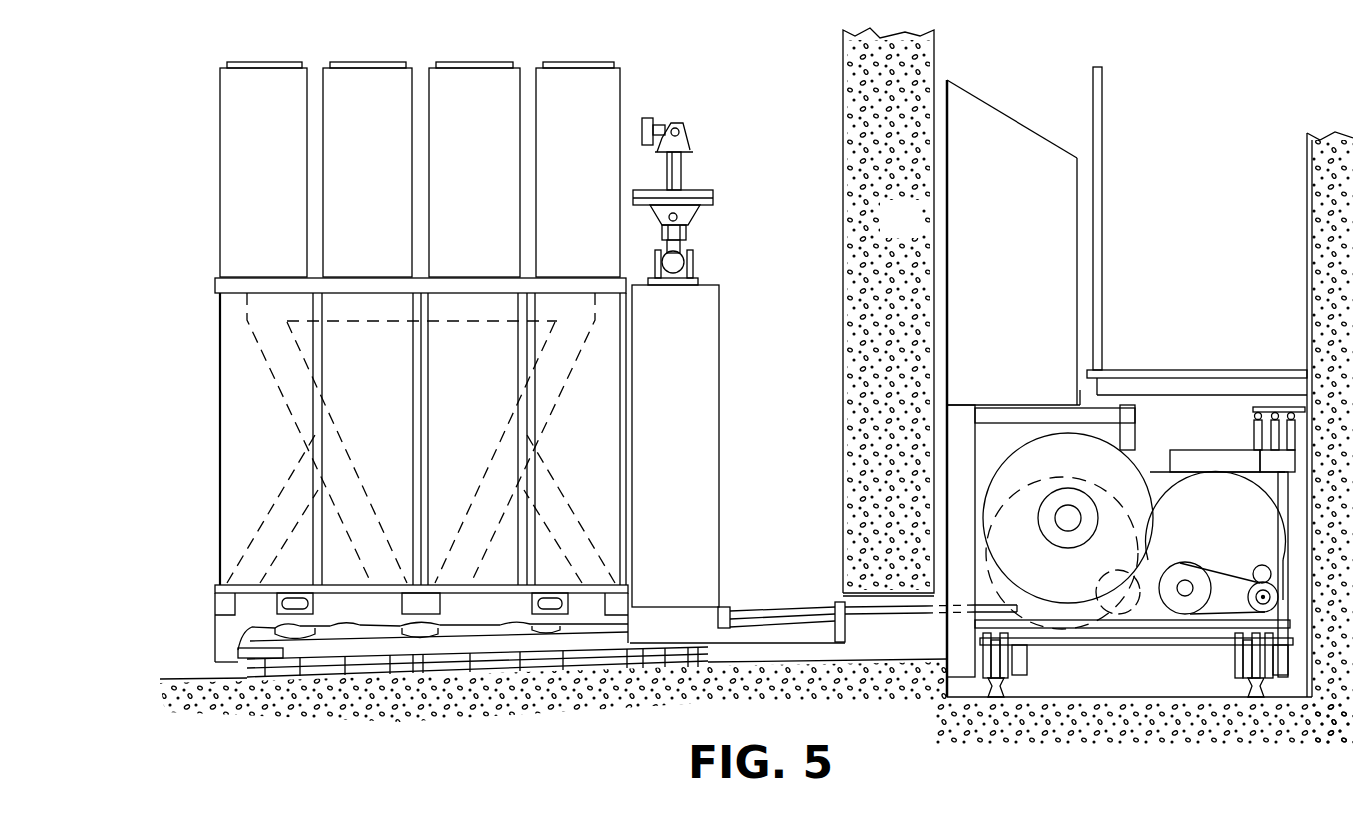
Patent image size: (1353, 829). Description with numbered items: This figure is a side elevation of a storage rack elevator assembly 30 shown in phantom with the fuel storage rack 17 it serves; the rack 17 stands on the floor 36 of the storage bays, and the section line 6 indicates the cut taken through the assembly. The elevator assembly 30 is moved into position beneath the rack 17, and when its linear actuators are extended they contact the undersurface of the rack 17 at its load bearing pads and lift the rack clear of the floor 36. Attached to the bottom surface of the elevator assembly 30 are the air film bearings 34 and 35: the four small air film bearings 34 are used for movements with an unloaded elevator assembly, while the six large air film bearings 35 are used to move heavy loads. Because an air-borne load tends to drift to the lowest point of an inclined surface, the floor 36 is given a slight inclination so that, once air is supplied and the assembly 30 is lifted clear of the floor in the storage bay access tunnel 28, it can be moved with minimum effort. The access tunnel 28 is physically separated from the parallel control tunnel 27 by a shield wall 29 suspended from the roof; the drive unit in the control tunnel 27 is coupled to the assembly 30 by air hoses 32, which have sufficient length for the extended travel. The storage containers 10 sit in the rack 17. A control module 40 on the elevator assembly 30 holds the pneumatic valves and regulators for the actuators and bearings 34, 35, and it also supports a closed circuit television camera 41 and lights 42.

The section line 6- 6 is at (677, 35).
The container 10 is at (280, 177).
The fuel storage rack 17 is at (214, 380).
The control tunnel 27 is at (1071, 80).
The storage bay access tunnel 28 is at (751, 80).
The shield wall 29 is at (916, 231).
The storage rack elevator assembly 30 is at (710, 646).
The air hoses 32 is at (812, 609).
The small air film bearings 34 is at (250, 665).
The large air film bearings 35 is at (370, 668).
The floor 36 is at (175, 678).
The control module 40 is at (675, 446).
The closed circuit television camera 41 is at (703, 190).
The lights 42 is at (681, 130).